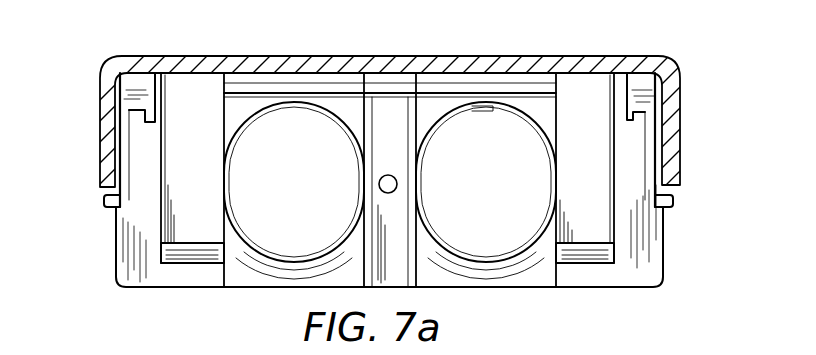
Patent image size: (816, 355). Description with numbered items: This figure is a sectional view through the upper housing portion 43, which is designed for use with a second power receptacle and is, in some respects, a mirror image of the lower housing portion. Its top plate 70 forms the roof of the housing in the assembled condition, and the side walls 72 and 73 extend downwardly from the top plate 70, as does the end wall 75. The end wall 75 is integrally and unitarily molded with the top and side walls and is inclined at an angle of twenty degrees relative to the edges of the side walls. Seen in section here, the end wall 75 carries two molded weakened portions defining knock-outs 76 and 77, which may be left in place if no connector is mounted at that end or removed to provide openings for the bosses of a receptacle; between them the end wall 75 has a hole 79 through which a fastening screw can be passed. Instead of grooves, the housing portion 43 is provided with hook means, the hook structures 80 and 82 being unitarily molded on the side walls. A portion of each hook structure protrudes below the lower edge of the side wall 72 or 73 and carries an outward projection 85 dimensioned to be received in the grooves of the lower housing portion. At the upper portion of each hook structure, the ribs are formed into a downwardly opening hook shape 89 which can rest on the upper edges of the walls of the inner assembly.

The housing portion 43 is at (687, 83).
The top plate 70 is at (377, 57).
The side wall 72 is at (680, 124).
The side wall 73 is at (100, 133).
The end wall 75 is at (663, 228).
The knock-out 76 is at (307, 197).
The knock-out 77 is at (495, 197).
The hole 79 is at (395, 191).
The hook structure 80 is at (650, 171).
The hook structure 82 is at (123, 174).
The outward projection 85 is at (105, 198).
The hook shape 89 is at (143, 121).